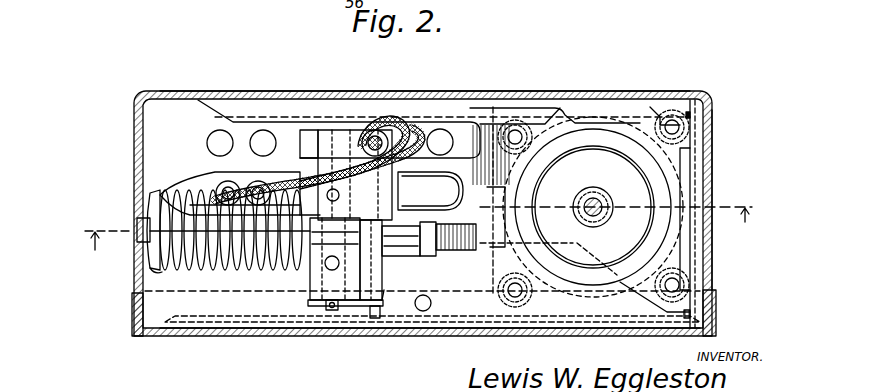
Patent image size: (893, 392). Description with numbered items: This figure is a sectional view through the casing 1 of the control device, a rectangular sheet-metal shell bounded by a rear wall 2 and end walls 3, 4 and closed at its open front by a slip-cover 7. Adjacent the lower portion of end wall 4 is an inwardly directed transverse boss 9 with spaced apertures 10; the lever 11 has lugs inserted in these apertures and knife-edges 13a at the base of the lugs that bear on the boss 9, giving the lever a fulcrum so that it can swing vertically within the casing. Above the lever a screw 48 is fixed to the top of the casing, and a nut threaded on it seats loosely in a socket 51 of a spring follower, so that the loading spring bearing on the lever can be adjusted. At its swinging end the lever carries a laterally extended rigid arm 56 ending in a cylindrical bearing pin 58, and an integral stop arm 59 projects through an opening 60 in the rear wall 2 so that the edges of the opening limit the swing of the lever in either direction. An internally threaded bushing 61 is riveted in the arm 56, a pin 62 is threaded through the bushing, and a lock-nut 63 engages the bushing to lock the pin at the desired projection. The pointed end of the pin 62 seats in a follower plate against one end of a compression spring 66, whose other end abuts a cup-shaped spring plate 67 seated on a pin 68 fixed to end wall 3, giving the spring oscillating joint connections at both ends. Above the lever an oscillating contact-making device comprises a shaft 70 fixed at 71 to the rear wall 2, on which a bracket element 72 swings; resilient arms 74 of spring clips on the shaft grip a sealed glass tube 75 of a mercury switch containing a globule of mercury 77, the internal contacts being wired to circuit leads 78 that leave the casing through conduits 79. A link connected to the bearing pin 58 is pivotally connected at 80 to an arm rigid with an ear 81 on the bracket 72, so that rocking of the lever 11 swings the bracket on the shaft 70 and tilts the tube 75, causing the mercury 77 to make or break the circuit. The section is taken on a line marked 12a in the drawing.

The casing 1 is at (157, 305).
The rear wall 2 is at (197, 99).
The end wall 3 is at (134, 136).
The end wall 4 is at (713, 166).
The slip-cover 7 is at (262, 330).
The transverse boss 9 is at (698, 193).
The apertures 10 is at (698, 118).
The lever 11 is at (485, 200).
The base plate portion 12a is at (497, 240).
The knife-edges 13a is at (668, 345).
The screw 48 is at (600, 214).
The socket 51 is at (600, 140).
The rigid arm 56 is at (418, 135).
The bearing pin 58 is at (375, 320).
The stop arm 59 is at (510, 122).
The opening 60 is at (465, 117).
The internally threaded bushing 61 is at (393, 257).
The pin 62 is at (470, 252).
The lock-nut 63 is at (417, 247).
The compression spring 66 is at (200, 262).
The cup-shaped spring plate 67 is at (145, 272).
The pin 68 is at (138, 220).
The shaft 70 is at (332, 311).
The shaft fixing 71 is at (322, 130).
The bracket element 72 is at (318, 278).
The resilient arms 74 is at (285, 217).
The glass tube 75 is at (200, 180).
The globule of mercury 77 is at (430, 191).
The circuit leads 78 is at (390, 125).
The conduits 79 is at (283, 120).
The pivotal connection 80 is at (368, 307).
The ear 81 is at (378, 283).